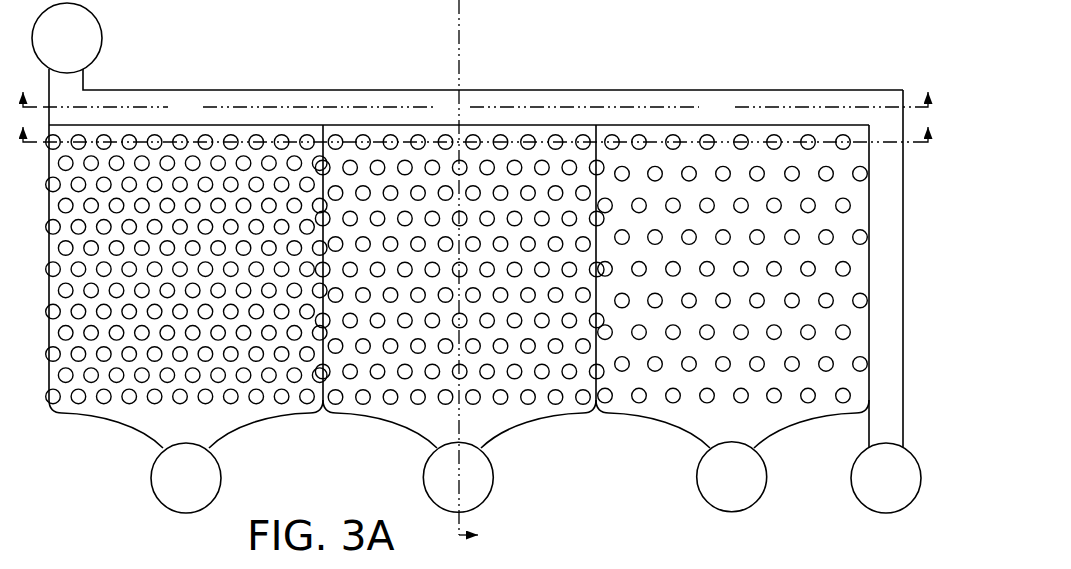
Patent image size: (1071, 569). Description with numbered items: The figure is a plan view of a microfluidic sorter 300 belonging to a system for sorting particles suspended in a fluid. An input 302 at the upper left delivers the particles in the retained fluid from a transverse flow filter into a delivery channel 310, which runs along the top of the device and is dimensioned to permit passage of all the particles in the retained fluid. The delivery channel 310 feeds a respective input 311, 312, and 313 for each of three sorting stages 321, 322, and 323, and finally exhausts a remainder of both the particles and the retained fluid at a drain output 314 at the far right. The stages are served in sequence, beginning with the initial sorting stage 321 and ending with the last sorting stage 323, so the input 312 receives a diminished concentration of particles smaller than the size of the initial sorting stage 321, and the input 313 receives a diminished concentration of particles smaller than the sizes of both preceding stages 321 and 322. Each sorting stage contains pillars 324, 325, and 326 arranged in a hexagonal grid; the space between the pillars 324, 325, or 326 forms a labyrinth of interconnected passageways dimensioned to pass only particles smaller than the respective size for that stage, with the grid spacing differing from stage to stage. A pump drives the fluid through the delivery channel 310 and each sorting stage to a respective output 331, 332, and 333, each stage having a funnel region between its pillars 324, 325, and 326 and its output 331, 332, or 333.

The microfluidic sorter 300 is at (904, 53).
The input 302 is at (51, 49).
The delivery channel 310 is at (365, 90).
The input 311 is at (192, 134).
The input 312 is at (461, 134).
The input 313 is at (725, 134).
The drain output 314 is at (870, 489).
The sorting stage 321 is at (82, 464).
The sorting stage 322 is at (357, 464).
The sorting stage 323 is at (632, 464).
The pillars 324 is at (204, 404).
The pillars 325 is at (472, 404).
The pillars 326 is at (739, 403).
The output 331 is at (170, 489).
The output 332 is at (442, 489).
The output 333 is at (748, 489).